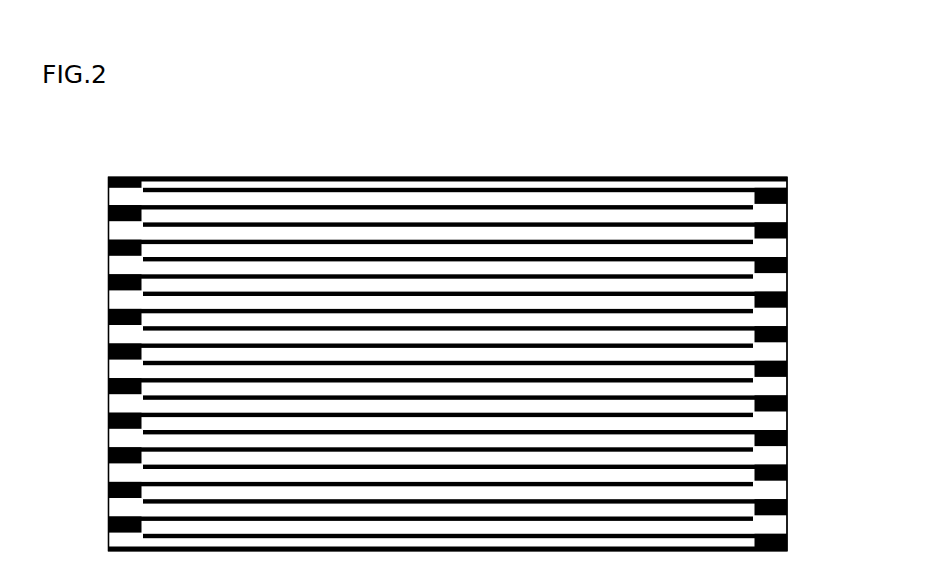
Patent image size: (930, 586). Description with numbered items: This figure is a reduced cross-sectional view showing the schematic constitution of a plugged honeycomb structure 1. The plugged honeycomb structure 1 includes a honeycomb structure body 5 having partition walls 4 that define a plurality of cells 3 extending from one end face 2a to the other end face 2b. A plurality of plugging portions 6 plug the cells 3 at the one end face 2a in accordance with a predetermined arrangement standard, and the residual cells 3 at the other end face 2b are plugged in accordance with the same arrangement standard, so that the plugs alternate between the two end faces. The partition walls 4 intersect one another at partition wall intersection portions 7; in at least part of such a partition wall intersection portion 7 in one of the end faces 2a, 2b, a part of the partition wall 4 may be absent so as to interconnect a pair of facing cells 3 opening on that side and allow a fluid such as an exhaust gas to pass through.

The plugged honeycomb structure 1 is at (432, 108).
The one end face 2a is at (108, 395).
The other end face 2b is at (788, 363).
The cells 3 is at (123, 263).
The partition walls 4 is at (222, 204).
The honeycomb structure body 5 is at (370, 165).
The plugging portions 6 is at (788, 241).
The partition wall intersection portion 7 is at (788, 282).